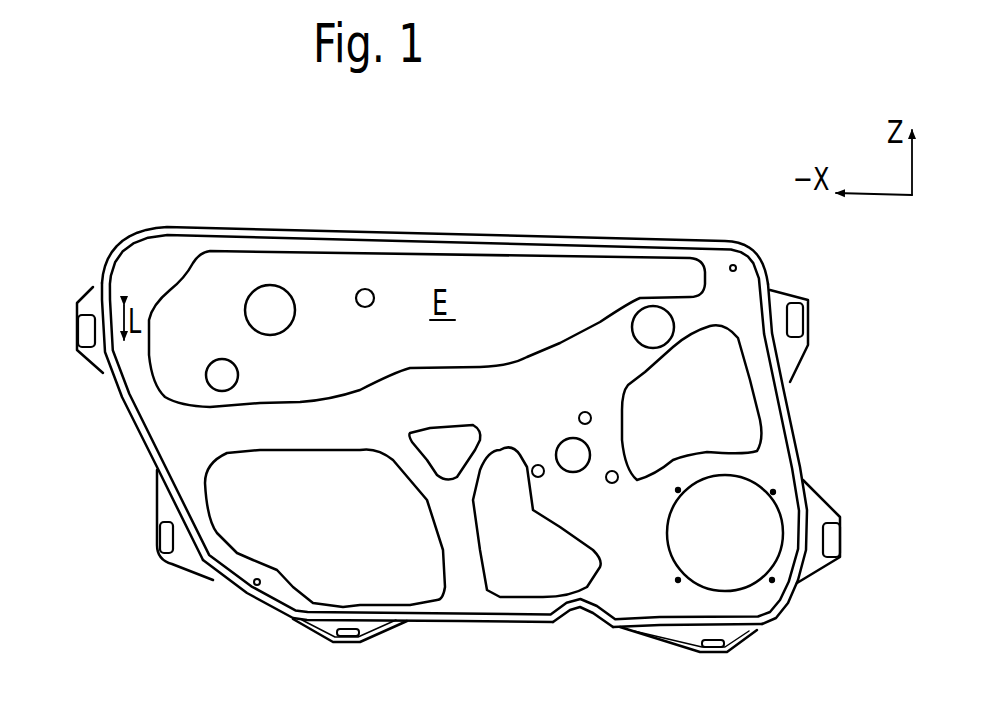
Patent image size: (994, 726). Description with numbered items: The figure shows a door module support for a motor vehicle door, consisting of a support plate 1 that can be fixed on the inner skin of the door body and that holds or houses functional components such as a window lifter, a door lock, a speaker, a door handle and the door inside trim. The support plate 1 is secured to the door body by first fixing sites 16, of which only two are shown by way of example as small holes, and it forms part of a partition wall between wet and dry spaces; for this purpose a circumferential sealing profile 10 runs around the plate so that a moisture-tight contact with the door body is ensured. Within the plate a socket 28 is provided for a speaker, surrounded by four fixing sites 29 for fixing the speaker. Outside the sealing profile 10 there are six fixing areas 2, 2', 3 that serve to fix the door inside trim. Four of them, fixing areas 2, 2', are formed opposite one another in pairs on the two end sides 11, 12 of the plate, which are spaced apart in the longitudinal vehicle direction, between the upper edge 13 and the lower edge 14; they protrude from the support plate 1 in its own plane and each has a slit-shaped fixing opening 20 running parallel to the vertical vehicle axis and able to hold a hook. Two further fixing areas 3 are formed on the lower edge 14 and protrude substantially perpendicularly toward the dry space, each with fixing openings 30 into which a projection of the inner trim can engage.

The support plate 1 is at (725, 298).
The fixing area 2 is at (448, 328).
The fixing area 2' is at (496, 526).
The fixing area 3 is at (373, 628).
The sealing profile 10 is at (527, 620).
The end side 11 is at (122, 413).
The end side 12 is at (790, 408).
The upper edge 13 is at (512, 235).
The lower edge 14 is at (600, 623).
The first fixing site 16 is at (731, 262).
The fixing opening 20 is at (80, 340).
The socket 28 is at (745, 528).
The fixing site 29 is at (773, 492).
The fixing opening 30 is at (342, 637).